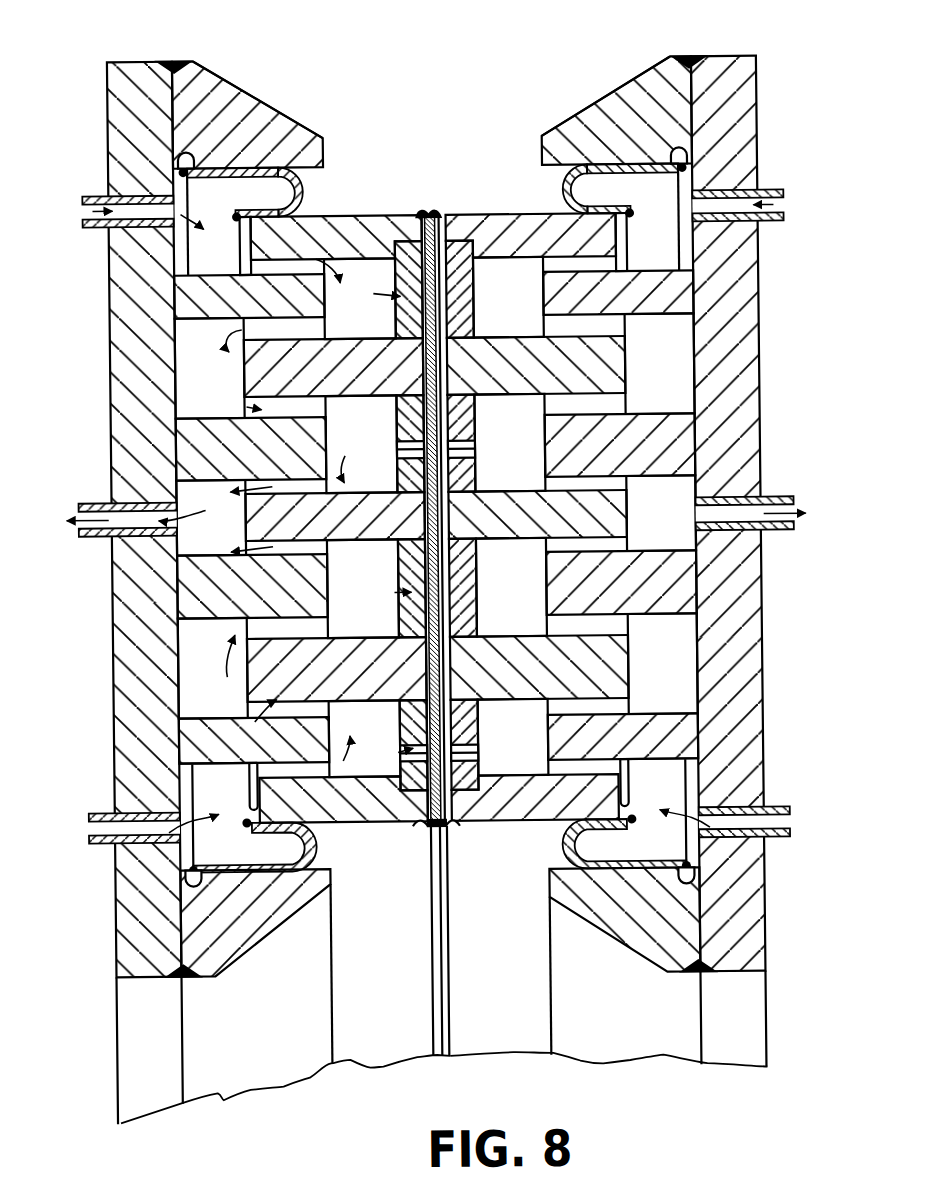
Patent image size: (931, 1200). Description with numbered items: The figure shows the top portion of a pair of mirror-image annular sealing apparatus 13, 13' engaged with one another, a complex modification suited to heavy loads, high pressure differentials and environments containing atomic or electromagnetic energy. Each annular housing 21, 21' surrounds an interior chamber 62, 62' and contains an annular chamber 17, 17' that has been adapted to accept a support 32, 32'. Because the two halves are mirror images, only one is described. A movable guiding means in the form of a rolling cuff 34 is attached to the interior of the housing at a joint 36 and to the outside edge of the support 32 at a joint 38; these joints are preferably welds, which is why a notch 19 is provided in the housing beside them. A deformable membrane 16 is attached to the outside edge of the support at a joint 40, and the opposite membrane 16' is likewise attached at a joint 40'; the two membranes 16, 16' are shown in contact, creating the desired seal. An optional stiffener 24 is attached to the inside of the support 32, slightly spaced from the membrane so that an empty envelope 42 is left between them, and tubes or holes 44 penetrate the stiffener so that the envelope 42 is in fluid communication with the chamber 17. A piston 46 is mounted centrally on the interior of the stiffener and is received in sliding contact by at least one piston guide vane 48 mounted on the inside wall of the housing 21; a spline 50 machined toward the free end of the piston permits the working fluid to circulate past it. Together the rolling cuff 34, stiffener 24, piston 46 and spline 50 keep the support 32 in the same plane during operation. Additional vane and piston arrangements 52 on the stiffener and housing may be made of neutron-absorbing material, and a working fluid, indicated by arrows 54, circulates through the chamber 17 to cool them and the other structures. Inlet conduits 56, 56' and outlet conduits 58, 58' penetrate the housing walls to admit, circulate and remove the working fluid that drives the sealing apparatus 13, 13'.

The sealing apparatus 13 is at (258, 84).
The sealing apparatus 13' is at (655, 68).
The membrane 16 is at (432, 494).
The membrane 16' is at (460, 611).
The annular chamber 17 is at (361, 444).
The annular chamber 17' is at (509, 443).
The notch 19 is at (208, 142).
The annular housing 21 is at (128, 583).
The annular housing 21' is at (747, 550).
The stiffener 24 is at (424, 824).
The support 32 is at (339, 496).
The support 32' is at (533, 493).
The rolling cuff 34 is at (306, 195).
The joint 36 is at (183, 168).
The joint 38 is at (300, 172).
The joint 40 is at (412, 858).
The joint 40' is at (471, 856).
The envelope 42 is at (400, 242).
The tubes or holes 44 is at (410, 450).
The piston 46 is at (321, 528).
The piston guide vane 48 is at (241, 462).
The spline 50 is at (334, 548).
The vane and piston arrangements 52 is at (245, 325).
The working fluid 54 is at (228, 408).
The inlet conduit 56 is at (138, 497).
The inlet conduit 56' is at (736, 485).
The outlet conduit 58 is at (121, 491).
The outlet conduit 58' is at (752, 484).
The interior chamber 62 is at (284, 995).
The interior chamber 62' is at (607, 968).